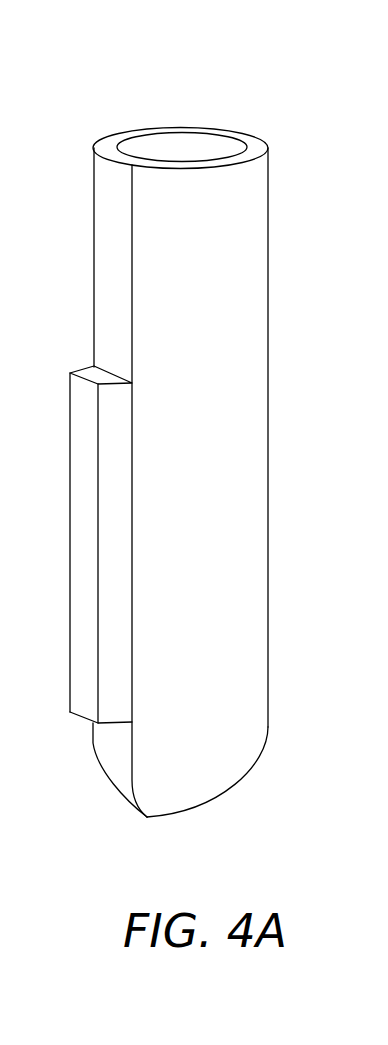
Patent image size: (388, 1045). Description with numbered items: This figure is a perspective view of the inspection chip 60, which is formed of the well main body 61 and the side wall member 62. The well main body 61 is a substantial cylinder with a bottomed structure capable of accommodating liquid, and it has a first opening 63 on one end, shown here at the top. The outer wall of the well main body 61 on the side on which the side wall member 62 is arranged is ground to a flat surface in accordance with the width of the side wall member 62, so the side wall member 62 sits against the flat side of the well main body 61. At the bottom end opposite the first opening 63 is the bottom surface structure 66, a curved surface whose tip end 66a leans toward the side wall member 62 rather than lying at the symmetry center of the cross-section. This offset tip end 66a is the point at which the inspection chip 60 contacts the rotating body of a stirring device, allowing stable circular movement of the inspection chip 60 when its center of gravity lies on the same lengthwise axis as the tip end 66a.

The inspection chip 60 is at (245, 93).
The well main body 61 is at (258, 252).
The side wall member 62 is at (85, 453).
The first opening 63 is at (171, 144).
The bottom surface structure 66 is at (223, 788).
The tip end 66a is at (147, 817).